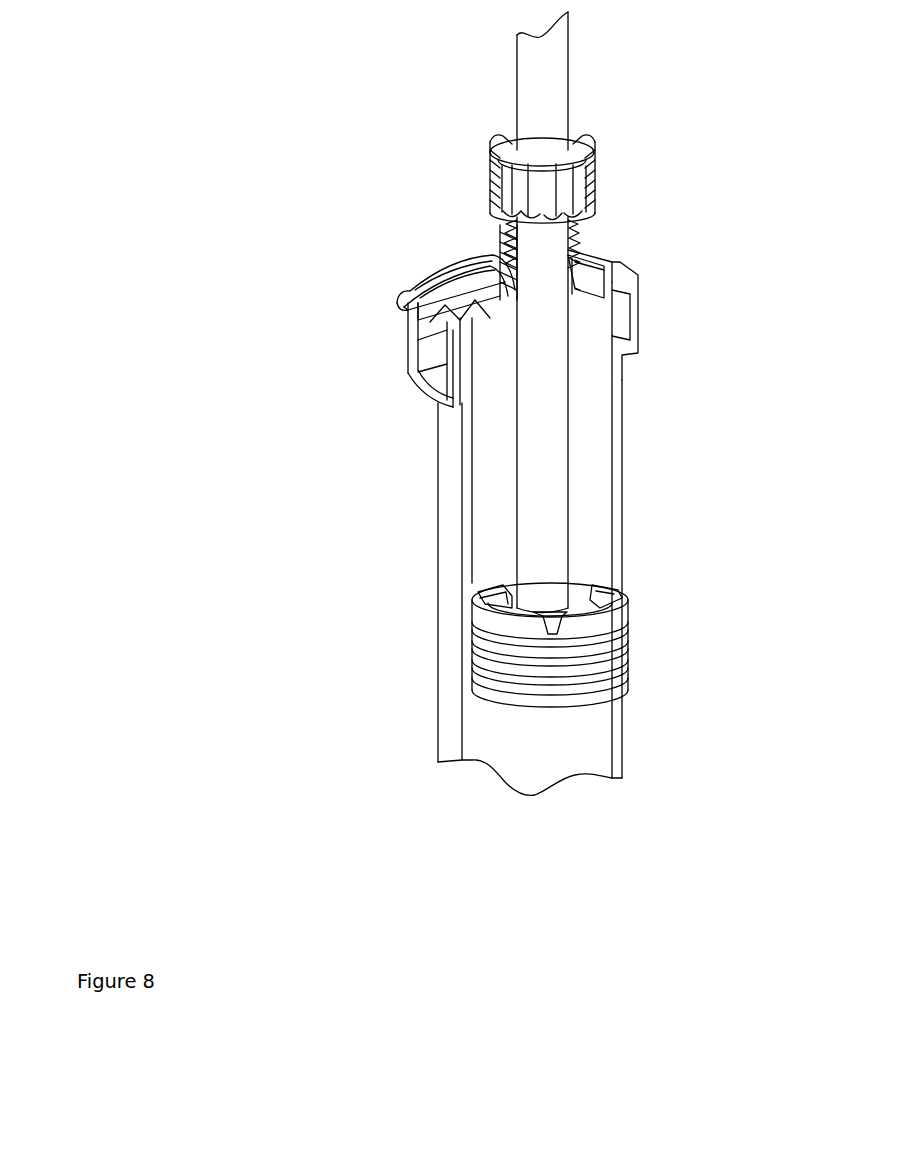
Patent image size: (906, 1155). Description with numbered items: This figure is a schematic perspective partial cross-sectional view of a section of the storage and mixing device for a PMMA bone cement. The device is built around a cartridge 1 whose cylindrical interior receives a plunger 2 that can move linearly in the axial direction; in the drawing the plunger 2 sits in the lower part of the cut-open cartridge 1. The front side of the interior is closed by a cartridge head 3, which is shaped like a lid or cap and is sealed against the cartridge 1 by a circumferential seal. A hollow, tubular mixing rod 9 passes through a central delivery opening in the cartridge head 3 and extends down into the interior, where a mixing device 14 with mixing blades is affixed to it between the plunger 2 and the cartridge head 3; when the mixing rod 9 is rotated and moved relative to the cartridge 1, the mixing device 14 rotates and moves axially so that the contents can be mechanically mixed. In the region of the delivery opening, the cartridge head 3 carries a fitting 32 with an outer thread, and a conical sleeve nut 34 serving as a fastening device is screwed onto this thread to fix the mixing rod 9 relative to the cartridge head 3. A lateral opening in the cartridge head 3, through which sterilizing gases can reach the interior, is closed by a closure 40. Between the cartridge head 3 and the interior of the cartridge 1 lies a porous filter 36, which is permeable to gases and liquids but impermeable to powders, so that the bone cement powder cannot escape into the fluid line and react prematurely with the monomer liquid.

The cartridge 1 is at (452, 632).
The plunger 2 is at (587, 690).
The cartridge head 3 is at (432, 363).
The mixing rod 9 is at (538, 98).
The mixing device 14 is at (627, 618).
The fitting 32 is at (500, 243).
The sleeve nut 34 is at (520, 182).
The porous filter 36 is at (495, 312).
The closure 40 is at (413, 295).